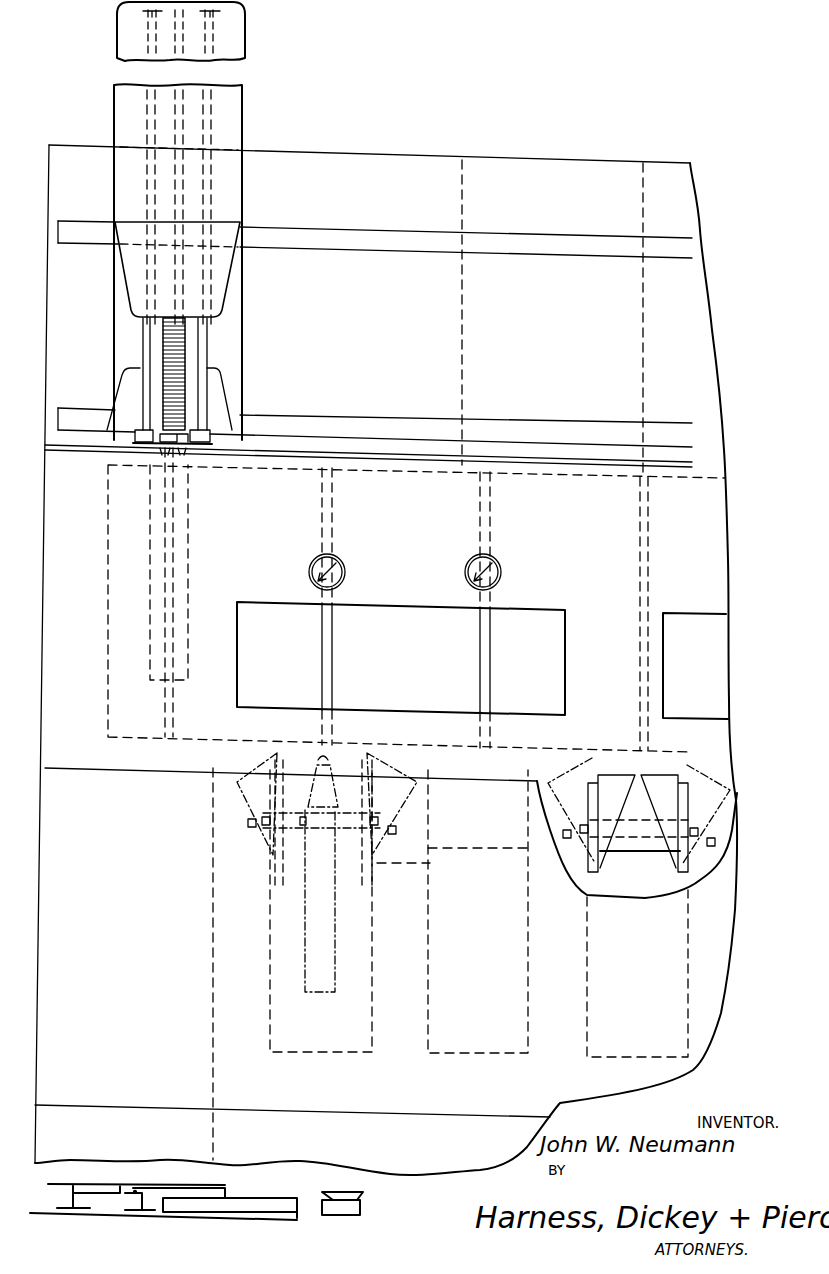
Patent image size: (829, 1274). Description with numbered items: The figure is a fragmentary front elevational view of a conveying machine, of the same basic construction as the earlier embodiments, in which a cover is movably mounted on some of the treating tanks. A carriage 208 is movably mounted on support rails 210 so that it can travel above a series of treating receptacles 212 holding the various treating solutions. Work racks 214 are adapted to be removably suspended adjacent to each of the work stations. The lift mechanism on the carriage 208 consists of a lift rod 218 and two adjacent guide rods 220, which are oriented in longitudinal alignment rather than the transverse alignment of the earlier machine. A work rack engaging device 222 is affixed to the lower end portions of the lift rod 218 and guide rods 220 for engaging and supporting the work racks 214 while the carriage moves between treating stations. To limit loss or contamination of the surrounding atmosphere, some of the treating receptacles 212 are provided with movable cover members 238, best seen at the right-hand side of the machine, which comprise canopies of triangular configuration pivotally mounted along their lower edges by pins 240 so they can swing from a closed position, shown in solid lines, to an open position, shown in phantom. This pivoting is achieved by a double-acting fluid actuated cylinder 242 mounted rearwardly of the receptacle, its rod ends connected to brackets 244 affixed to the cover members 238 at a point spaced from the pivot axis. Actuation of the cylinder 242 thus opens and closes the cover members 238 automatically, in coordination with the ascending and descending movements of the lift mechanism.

The carriage 208 is at (254, 127).
The support rails 210 is at (388, 258).
The treating receptacles 212 is at (423, 1013).
The work racks 214 is at (187, 557).
The lift rod 218 is at (183, 346).
The guide rods 220 is at (150, 390).
The work rack engaging device 222 is at (213, 448).
The movable cover members 238 is at (277, 752).
The pins 240 is at (273, 855).
The double-acting fluid actuated cylinder 242 is at (297, 865).
The brackets 244 is at (247, 823).